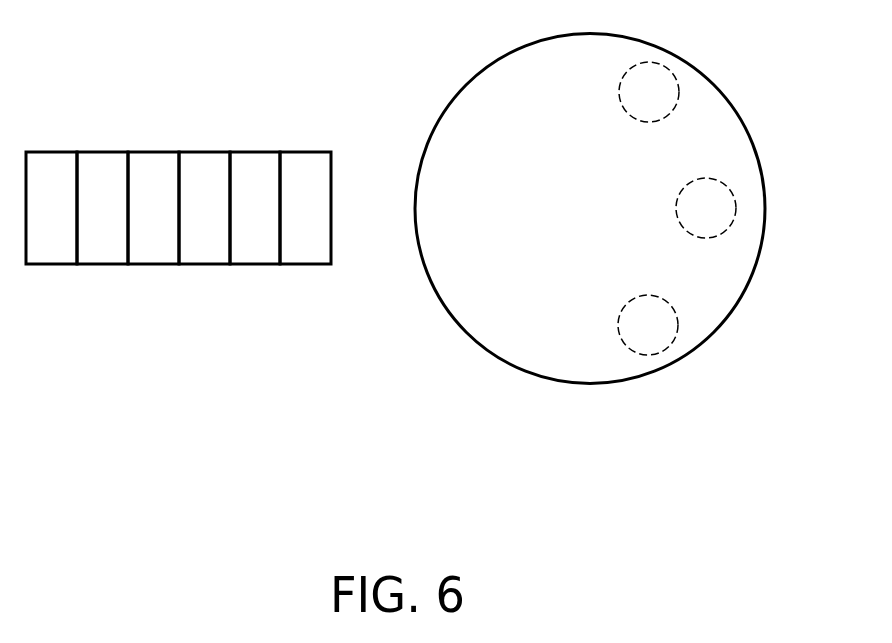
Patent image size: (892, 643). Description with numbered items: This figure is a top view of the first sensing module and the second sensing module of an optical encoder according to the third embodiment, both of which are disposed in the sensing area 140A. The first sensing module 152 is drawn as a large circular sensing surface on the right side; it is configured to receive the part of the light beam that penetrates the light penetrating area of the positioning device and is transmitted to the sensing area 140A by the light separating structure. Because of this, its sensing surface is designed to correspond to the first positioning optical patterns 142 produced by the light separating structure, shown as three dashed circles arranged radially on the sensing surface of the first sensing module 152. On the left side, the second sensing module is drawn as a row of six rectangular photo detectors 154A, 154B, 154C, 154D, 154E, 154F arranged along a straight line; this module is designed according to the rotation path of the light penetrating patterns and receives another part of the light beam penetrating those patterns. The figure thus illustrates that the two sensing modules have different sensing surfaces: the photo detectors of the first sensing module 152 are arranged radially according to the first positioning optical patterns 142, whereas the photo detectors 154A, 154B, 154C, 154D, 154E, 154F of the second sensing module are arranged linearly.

The sensing area 140A is at (798, 482).
The first positioning optical pattern 142 is at (682, 76).
The first sensing module 152 is at (720, 148).
The photo detector 154A is at (52, 250).
The photo detector 154B is at (103, 246).
The photo detector 154C is at (153, 248).
The photo detector 154D is at (202, 246).
The photo detector 154E is at (253, 248).
The photo detector 154F is at (306, 246).